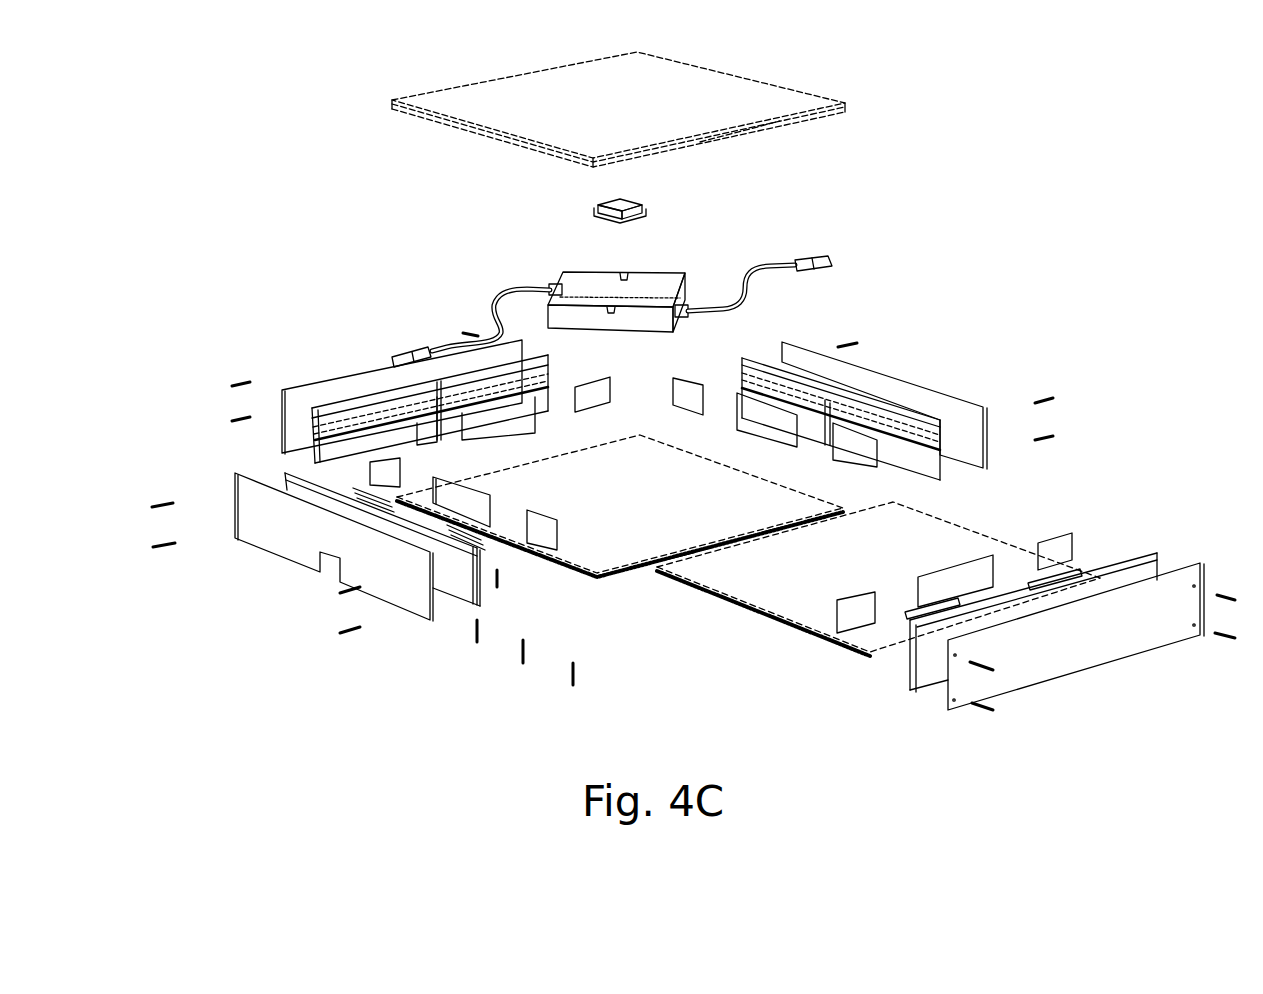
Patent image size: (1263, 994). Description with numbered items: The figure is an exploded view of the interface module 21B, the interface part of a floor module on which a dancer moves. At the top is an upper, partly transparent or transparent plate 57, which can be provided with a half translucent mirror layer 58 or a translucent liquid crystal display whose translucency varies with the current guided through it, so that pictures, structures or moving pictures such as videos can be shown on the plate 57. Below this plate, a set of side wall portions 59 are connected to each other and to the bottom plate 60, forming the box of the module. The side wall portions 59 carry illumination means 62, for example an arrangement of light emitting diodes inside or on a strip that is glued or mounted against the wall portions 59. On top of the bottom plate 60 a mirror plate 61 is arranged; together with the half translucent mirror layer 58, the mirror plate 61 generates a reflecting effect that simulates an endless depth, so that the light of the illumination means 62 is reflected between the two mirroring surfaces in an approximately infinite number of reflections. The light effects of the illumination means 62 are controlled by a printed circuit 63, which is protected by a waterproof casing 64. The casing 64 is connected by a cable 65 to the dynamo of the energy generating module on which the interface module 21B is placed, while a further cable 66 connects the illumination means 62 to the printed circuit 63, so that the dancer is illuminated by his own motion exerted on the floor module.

The interface module 21B is at (1050, 255).
The upper plate 57 is at (778, 92).
The half translucent mirror layer 58 is at (781, 134).
The side wall portion 59 is at (333, 378).
The bottom plate 60 is at (607, 576).
The mirror plate 61 is at (757, 608).
The illumination means 62 is at (610, 376).
The printed circuit 63 is at (592, 212).
The waterproof casing 64 is at (560, 282).
The cable 65 is at (771, 262).
The cable 66 is at (492, 302).